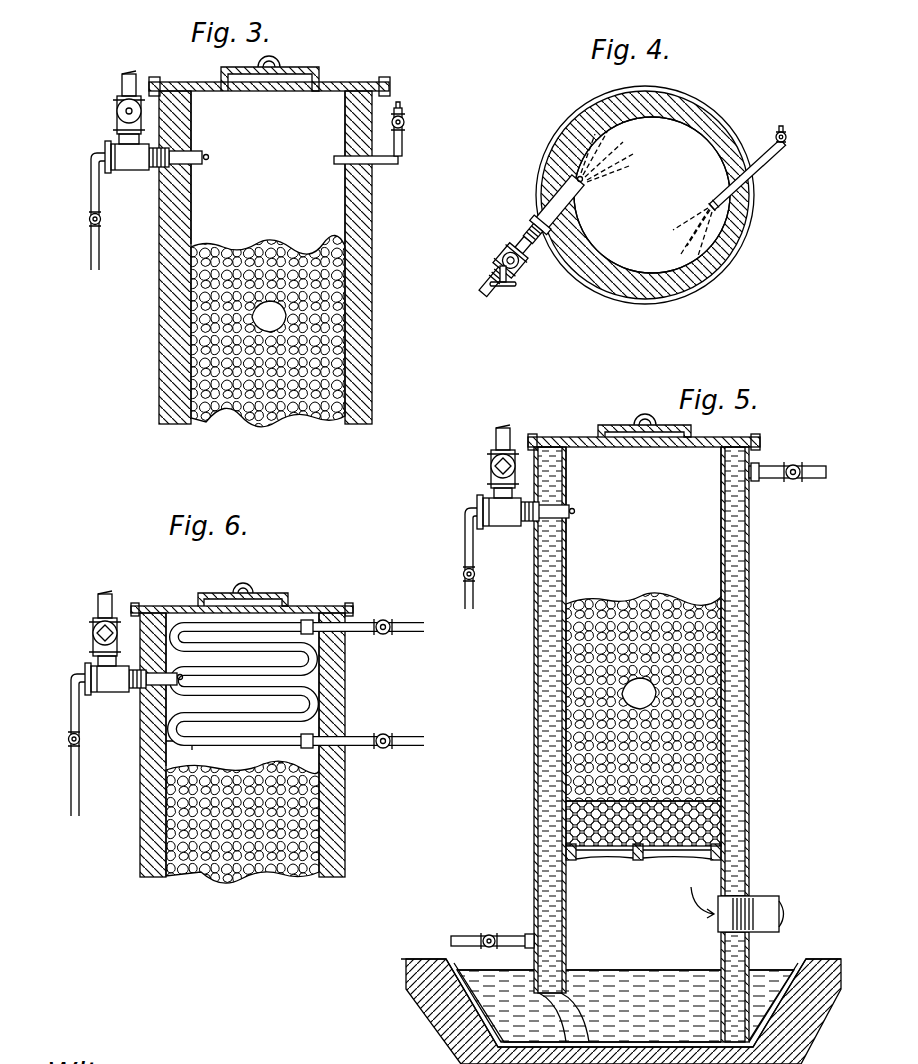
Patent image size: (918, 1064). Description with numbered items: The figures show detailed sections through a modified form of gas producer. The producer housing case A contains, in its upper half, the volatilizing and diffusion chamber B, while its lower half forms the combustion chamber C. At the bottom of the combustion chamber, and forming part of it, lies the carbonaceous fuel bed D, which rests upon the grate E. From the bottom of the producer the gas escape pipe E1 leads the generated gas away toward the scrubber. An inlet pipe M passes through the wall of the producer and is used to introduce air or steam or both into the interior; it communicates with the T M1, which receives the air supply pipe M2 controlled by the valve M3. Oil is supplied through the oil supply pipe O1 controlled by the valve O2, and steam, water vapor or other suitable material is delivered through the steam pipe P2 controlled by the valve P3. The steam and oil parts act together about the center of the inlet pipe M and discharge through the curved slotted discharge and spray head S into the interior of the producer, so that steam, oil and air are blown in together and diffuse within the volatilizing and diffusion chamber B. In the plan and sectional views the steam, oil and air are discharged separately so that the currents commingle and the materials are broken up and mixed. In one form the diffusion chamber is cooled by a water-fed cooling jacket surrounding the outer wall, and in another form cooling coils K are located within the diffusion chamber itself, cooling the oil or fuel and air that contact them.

In FIG. 3, the producer housing case A is at (159, 321).
In FIG. 4, the producer housing case A is at (735, 248).
In FIG. 5, the producer housing case A is at (750, 672).
In FIG. 6, the producer housing case A is at (344, 772).
In FIG. 3, the volatilizing and diffusion chamber B is at (268, 167).
In FIG. 4, the volatilizing and diffusion chamber B is at (652, 195).
In FIG. 5, the volatilizing and diffusion chamber B is at (643, 522).
In FIG. 6, the volatilizing and diffusion chamber B is at (305, 680).
In FIG. 3, the combustion chamber C is at (268, 330).
In FIG. 5, the combustion chamber C is at (643, 697).
In FIG. 6, the combustion chamber C is at (300, 829).
In FIG. 5, the carbonaceous fuel bed D is at (722, 822).
In FIG. 5, the grate E is at (622, 858).
In FIG. 5, the gas escape pipe E1 is at (765, 898).
In FIG. 6, the cooling coils K is at (312, 702).
In FIG. 3, the inlet pipe M is at (192, 148).
In FIG. 4, the inlet pipe M is at (525, 213).
In FIG. 5, the inlet pipe M is at (570, 514).
In FIG. 6, the inlet pipe M is at (130, 686).
In FIG. 3, the T M1 is at (132, 167).
In FIG. 5, the T M1 is at (505, 523).
In FIG. 6, the T M1 is at (103, 690).
In FIG. 3, the air supply pipe M2 is at (122, 78).
In FIG. 4, the air supply pipe M2 is at (497, 240).
In FIG. 5, the air supply pipe M2 is at (496, 437).
In FIG. 6, the air supply pipe M2 is at (99, 598).
In FIG. 3, the valve M3 is at (116, 106).
In FIG. 4, the valve M3 is at (512, 284).
In FIG. 5, the valve M3 is at (490, 463).
In FIG. 6, the valve M3 is at (92, 626).
In FIG. 3, the oil supply pipe O1 is at (90, 182).
In FIG. 4, the oil supply pipe O1 is at (470, 274).
In FIG. 5, the oil supply pipe O1 is at (464, 541).
In FIG. 6, the oil supply pipe O1 is at (73, 786).
In FIG. 3, the valve O2 is at (88, 216).
In FIG. 5, the valve O2 is at (462, 570).
In FIG. 6, the valve O2 is at (68, 733).
In FIG. 3, the steam pipe P2 is at (384, 161).
In FIG. 4, the steam pipe P2 is at (762, 160).
In FIG. 3, the valve P3 is at (405, 118).
In FIG. 4, the valve P3 is at (786, 140).
In FIG. 3, the curved slotted discharge and spray head S is at (207, 156).
In FIG. 4, the curved slotted discharge and spray head S is at (582, 178).
In FIG. 5, the curved slotted discharge and spray head S is at (575, 508).
In FIG. 6, the curved slotted discharge and spray head S is at (175, 668).